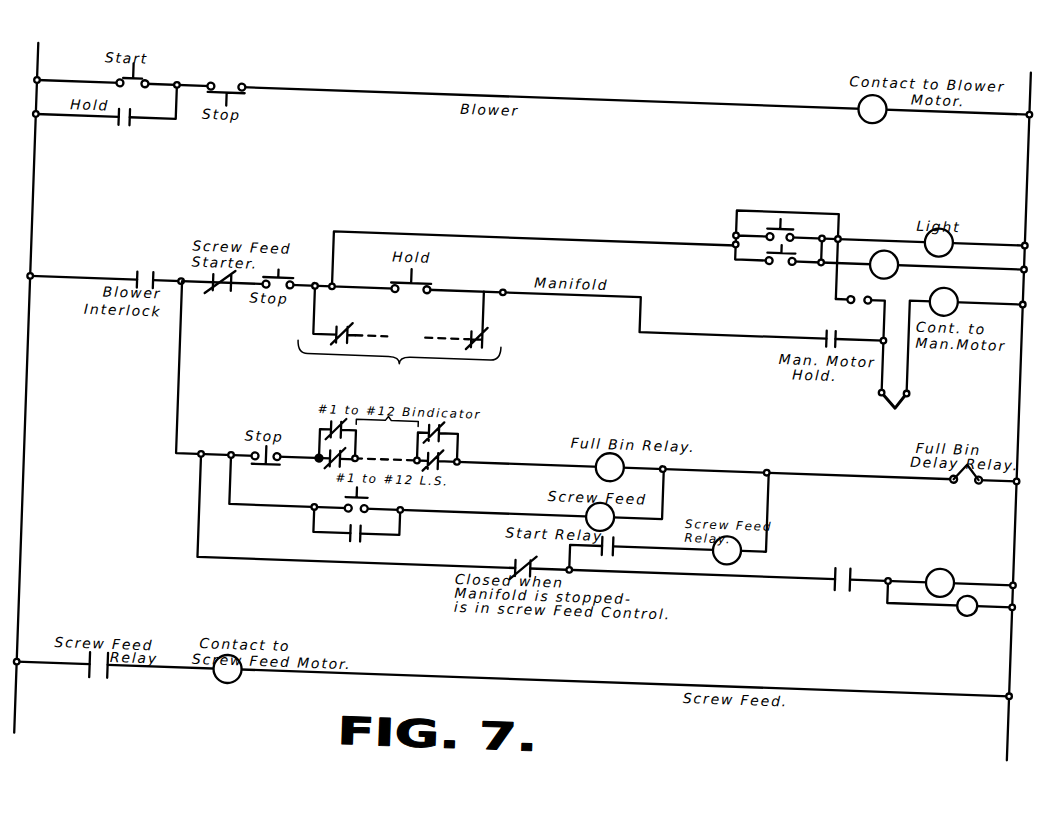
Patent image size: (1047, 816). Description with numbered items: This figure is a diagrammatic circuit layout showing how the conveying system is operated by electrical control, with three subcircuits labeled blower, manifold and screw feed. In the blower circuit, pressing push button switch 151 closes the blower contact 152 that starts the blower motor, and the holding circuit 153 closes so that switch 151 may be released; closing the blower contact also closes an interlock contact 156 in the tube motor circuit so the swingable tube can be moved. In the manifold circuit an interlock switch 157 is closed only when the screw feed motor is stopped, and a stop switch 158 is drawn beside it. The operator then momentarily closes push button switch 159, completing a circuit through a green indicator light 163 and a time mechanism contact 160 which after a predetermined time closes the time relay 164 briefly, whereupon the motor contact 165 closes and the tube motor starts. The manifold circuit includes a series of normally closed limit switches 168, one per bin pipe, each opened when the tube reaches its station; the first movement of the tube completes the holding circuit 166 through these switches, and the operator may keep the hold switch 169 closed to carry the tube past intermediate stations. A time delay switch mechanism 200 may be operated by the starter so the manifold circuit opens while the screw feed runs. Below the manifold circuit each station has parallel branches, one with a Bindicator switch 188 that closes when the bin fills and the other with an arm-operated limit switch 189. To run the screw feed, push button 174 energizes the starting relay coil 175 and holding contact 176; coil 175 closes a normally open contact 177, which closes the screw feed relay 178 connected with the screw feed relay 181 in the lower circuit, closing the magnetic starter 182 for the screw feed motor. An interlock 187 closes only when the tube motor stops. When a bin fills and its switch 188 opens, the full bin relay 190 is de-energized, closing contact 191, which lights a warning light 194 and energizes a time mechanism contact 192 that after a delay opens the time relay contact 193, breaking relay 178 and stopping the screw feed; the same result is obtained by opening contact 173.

The push button switch 151 is at (123, 76).
The blower contact 152 is at (860, 72).
The holding circuit 153 is at (117, 121).
The interlock contact 156 is at (140, 266).
The interlock switch 157 is at (218, 287).
The manifold stop switch 158 is at (288, 279).
The push button switch 159 is at (787, 243).
The time mechanism contact 160 is at (880, 222).
The green indicator light 163 is at (960, 206).
The time relay 164 is at (868, 268).
The motor contact 165 is at (961, 259).
The holding circuit 166 is at (826, 308).
The limit switches 168 is at (422, 334).
The hold switch 169 is at (437, 268).
The contact 173 is at (260, 465).
The push button 174 is at (386, 493).
The starting relay coil 175 is at (637, 484).
The holding contact 176 is at (380, 530).
The normally open contact 177 is at (639, 511).
The screw feed relay 178 is at (731, 535).
The screw feed relay 181 is at (107, 673).
The magnetic starter 182 is at (236, 673).
The interlock 187 is at (528, 546).
The Bindicator switch 188 is at (329, 409).
The limit switch 189 is at (343, 463).
The full bin relay 190 is at (646, 433).
The contact 191 is at (854, 565).
The time mechanism contact 192 is at (966, 545).
The time relay contact 193 is at (944, 484).
The warning light 194 is at (978, 582).
The time delay switch mechanism 200 is at (920, 372).